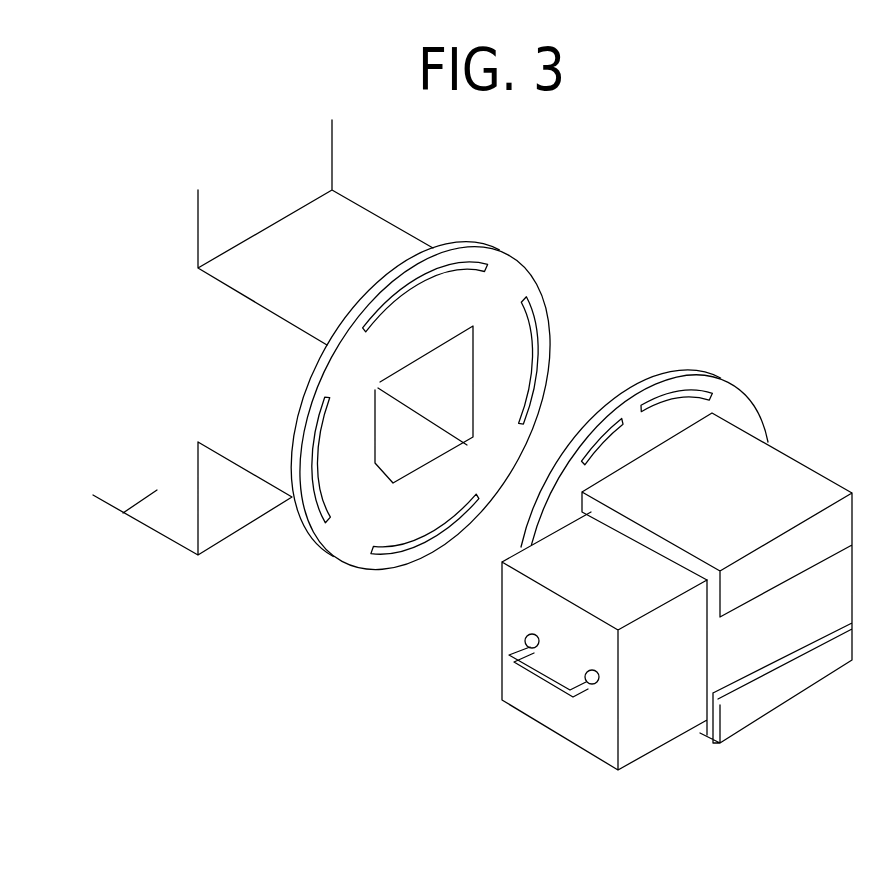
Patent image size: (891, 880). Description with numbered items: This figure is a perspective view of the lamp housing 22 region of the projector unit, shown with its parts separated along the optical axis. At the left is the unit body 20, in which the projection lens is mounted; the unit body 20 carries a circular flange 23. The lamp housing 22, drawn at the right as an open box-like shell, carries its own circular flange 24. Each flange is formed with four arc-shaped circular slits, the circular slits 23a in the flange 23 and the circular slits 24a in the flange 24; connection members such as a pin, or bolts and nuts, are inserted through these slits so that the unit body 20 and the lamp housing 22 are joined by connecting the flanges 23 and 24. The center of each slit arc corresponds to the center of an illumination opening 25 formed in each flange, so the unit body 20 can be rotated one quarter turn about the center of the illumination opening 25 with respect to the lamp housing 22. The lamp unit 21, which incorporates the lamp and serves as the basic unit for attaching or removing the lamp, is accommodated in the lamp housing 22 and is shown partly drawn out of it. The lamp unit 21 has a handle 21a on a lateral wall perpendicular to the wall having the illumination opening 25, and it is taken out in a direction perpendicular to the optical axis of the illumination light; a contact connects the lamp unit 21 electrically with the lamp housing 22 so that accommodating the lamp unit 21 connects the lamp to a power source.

The unit body 20 is at (123, 513).
The lamp unit 21 is at (641, 728).
The handle 21a is at (527, 668).
The lamp housing 22 is at (800, 463).
The circular flange 23 is at (461, 241).
The circular slits 23a is at (488, 266).
The circular flange 24 is at (672, 372).
The circular slits 24a is at (718, 396).
The illumination opening 25 is at (375, 465).